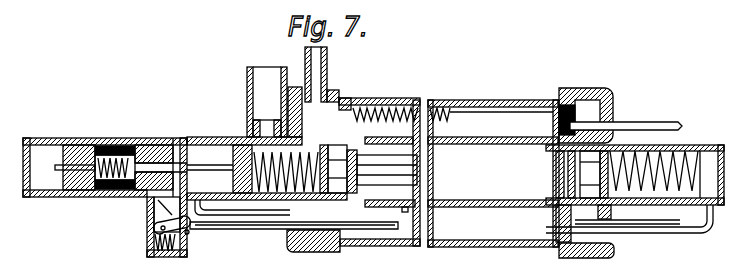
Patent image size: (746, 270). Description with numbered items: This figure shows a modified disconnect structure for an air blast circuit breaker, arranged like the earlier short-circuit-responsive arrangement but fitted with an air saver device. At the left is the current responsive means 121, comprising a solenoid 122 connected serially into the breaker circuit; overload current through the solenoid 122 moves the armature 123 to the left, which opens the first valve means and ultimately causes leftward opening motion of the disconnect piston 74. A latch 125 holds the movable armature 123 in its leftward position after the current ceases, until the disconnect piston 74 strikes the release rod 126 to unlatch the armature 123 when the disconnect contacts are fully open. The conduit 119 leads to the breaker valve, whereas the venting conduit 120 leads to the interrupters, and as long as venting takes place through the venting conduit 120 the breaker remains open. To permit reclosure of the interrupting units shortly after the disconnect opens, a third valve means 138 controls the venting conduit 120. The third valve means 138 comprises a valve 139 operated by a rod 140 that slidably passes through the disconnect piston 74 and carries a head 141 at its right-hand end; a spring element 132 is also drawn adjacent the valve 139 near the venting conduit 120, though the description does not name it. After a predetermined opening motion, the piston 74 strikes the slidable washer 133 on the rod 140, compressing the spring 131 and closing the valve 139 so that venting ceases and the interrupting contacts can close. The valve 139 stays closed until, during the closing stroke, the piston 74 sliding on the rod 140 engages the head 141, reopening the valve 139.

The disconnect piston 74 is at (556, 232).
The conduit 119 is at (247, 90).
The venting conduit 120 is at (328, 55).
The current responsive means 121 is at (118, 217).
The solenoid 122 is at (88, 138).
The armature 123 is at (150, 138).
The latch 125 is at (153, 208).
The release rod 126 is at (252, 230).
The spring 131 is at (407, 98).
The spring 132 is at (352, 112).
The slidable washer 133 is at (454, 101).
The third valve means 138 is at (372, 87).
The valve 139 is at (334, 89).
The rod 140 is at (498, 113).
The head 141 is at (596, 92).